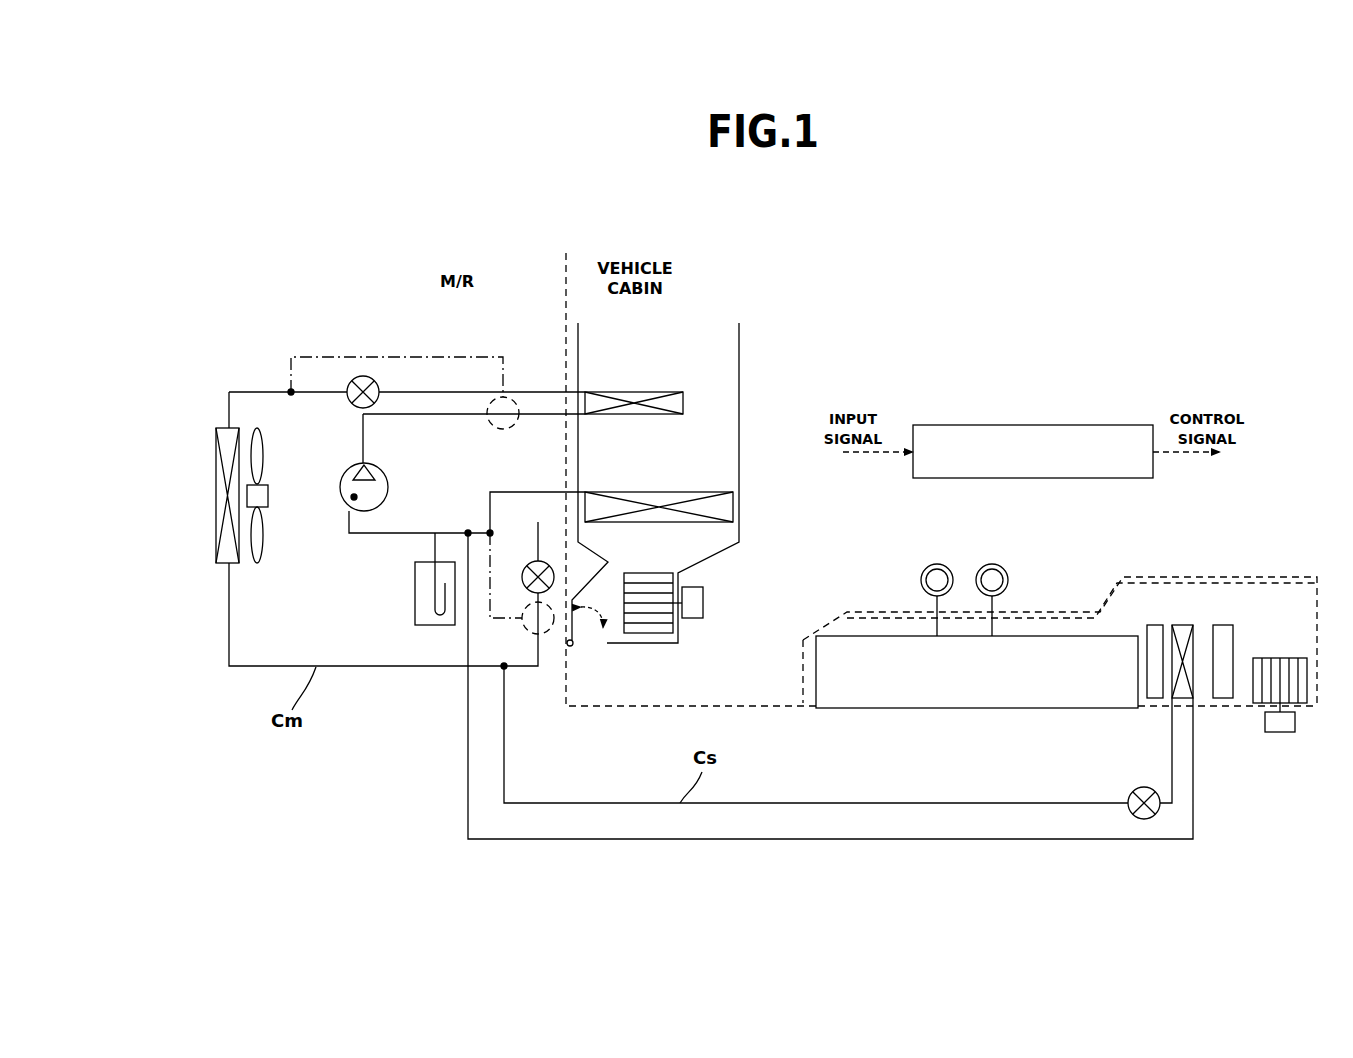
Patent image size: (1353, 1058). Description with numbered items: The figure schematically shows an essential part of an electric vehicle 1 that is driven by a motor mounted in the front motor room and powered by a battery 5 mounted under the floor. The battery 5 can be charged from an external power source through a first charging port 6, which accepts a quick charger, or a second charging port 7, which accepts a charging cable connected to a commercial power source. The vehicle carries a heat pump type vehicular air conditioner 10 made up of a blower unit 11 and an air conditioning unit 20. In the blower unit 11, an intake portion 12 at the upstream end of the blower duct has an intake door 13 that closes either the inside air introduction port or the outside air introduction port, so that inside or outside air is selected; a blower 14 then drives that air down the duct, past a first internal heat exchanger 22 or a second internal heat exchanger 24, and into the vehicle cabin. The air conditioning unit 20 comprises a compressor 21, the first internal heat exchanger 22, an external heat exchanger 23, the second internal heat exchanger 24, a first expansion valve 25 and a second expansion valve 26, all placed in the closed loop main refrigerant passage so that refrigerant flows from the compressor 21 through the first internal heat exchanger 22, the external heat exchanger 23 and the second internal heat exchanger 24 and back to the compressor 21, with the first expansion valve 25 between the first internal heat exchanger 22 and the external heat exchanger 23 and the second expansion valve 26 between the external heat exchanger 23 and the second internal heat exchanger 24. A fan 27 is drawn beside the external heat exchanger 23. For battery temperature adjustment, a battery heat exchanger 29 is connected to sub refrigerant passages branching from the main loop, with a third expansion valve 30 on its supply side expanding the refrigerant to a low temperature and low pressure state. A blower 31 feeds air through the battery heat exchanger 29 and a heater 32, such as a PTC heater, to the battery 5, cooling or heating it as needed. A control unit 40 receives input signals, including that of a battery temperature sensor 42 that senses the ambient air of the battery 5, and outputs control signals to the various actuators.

The electric vehicle 1 is at (857, 267).
The battery 5 is at (925, 708).
The first charging port 6 is at (937, 564).
The second charging port 7 is at (992, 564).
The vehicular air conditioner 10 is at (753, 357).
The blower unit 11 is at (715, 555).
The intake portion 12 is at (578, 668).
The intake door 13 is at (576, 628).
The blower 14 is at (648, 573).
The air conditioning unit 20 is at (508, 277).
The compressor 21 is at (354, 497).
The first internal heat exchanger 22 is at (683, 392).
The external heat exchanger 23 is at (224, 563).
The second internal heat exchanger 24 is at (733, 492).
The first expansion valve 25 is at (363, 376).
The second expansion valve 26 is at (528, 565).
The fan 27 is at (262, 468).
The battery heat exchanger 29 is at (1195, 650).
The third expansion valve 30 is at (1140, 820).
The blower 31 is at (1307, 665).
The heater 32 is at (1150, 698).
The control unit 40 is at (1048, 425).
The battery temperature sensor 42 is at (1222, 698).